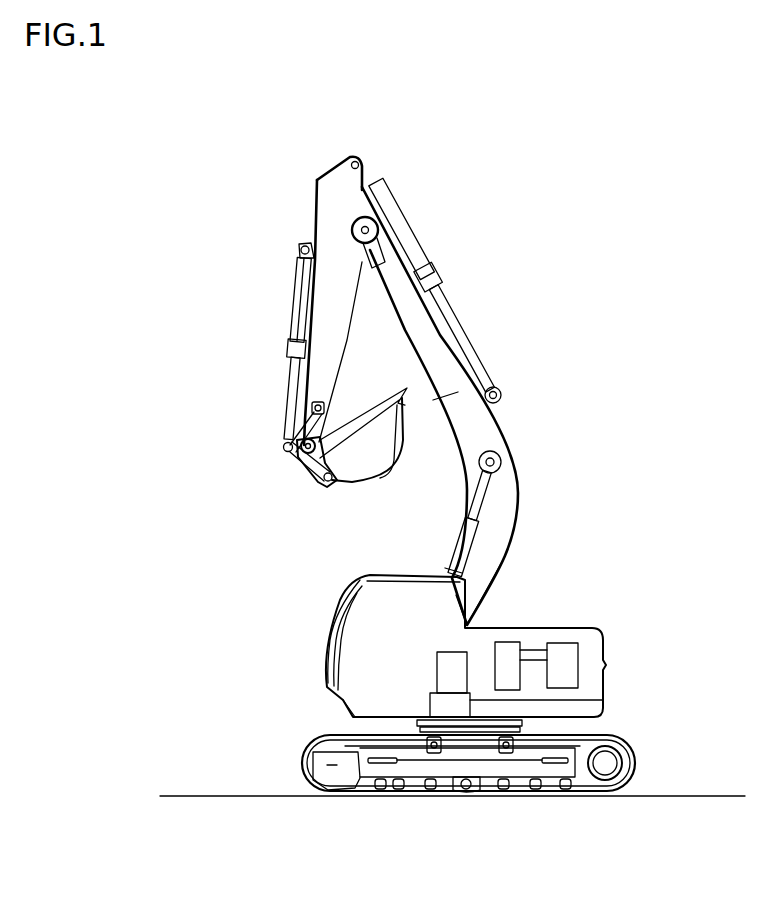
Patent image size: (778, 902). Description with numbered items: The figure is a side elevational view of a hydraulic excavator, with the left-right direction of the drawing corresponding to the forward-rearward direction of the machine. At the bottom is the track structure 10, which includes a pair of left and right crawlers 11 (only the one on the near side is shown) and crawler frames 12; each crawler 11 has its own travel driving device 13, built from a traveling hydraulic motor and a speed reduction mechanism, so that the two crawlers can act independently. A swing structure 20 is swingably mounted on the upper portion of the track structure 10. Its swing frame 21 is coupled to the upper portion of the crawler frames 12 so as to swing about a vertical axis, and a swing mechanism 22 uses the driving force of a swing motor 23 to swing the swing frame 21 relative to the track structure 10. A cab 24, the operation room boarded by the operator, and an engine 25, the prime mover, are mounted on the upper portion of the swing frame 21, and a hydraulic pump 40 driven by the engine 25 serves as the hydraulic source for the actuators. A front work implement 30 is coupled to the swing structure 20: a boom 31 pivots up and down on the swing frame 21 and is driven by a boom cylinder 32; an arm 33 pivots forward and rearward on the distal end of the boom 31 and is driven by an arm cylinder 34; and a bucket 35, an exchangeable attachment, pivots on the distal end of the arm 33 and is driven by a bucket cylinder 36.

The track structure 10 is at (300, 761).
The crawler 11 is at (637, 763).
The crawler frame 12 is at (488, 772).
The travel driving device 13 is at (606, 772).
The swing structure 20 is at (331, 642).
The swing frame 21 is at (605, 707).
The swing mechanism 22 is at (432, 705).
The swing motor 23 is at (437, 670).
The cab 24 is at (339, 611).
The engine 25 is at (564, 643).
The front work implement 30 is at (517, 431).
The boom 31 is at (520, 493).
The boom cylinder 32 is at (453, 546).
The arm 33 is at (317, 188).
The arm cylinder 34 is at (465, 337).
The bucket 35 is at (375, 482).
The bucket cylinder 36 is at (295, 316).
The hydraulic pump 40 is at (508, 642).